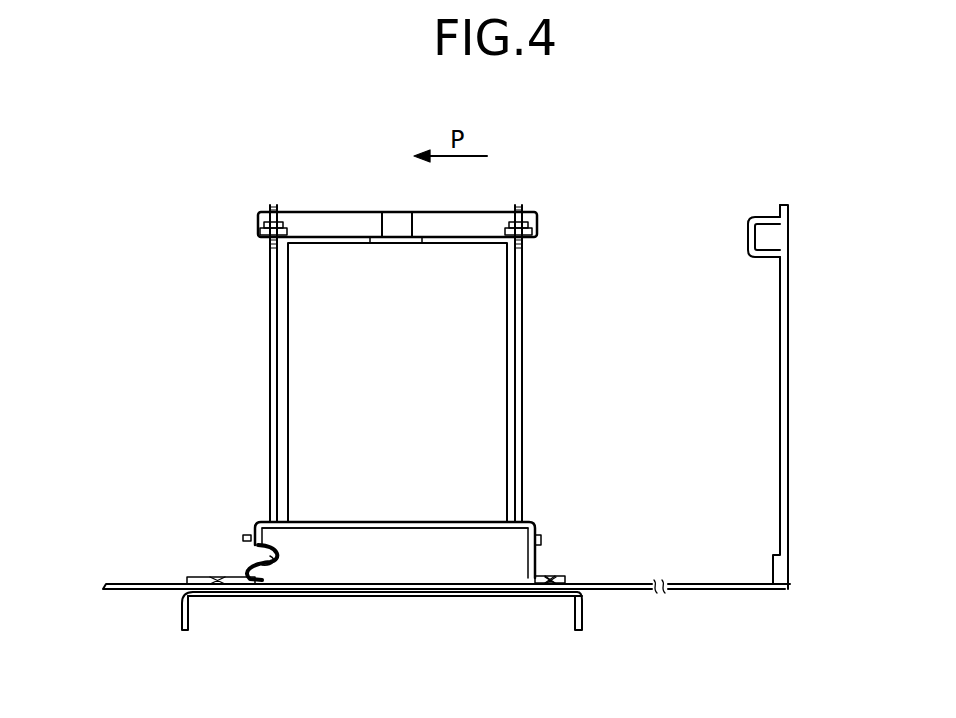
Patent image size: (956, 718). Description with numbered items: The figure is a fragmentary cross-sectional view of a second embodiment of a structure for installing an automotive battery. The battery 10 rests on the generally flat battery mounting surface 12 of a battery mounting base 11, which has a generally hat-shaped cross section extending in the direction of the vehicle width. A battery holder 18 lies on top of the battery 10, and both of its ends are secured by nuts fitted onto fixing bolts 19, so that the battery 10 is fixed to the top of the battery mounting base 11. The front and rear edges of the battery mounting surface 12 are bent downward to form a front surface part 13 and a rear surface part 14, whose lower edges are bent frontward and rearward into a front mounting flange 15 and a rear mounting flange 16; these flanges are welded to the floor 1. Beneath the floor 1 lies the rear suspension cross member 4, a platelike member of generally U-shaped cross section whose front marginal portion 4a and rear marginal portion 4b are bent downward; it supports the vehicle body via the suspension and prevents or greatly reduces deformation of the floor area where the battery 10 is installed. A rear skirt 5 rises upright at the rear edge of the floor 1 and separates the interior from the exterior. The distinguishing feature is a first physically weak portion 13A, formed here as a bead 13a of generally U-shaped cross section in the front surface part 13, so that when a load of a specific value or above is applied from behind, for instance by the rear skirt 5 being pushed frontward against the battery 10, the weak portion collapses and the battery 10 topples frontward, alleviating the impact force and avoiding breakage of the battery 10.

The floor 1 is at (628, 583).
The rear suspension cross member 4 is at (375, 598).
The front marginal portion 4a is at (180, 622).
The rear marginal portion 4b is at (583, 612).
The rear skirt 5 is at (789, 278).
The battery 10 is at (490, 345).
The battery mounting base 11 is at (550, 520).
The battery mounting surface 12 is at (432, 530).
The front surface part 13 is at (250, 530).
The bead 13a is at (262, 561).
The first physically weak portion 13A is at (213, 568).
The rear surface part 14 is at (538, 553).
The front mounting flange 15 is at (240, 590).
The rear mounting flange 16 is at (558, 585).
The battery holder 18 is at (338, 218).
The fixing bolts 19 is at (268, 294).